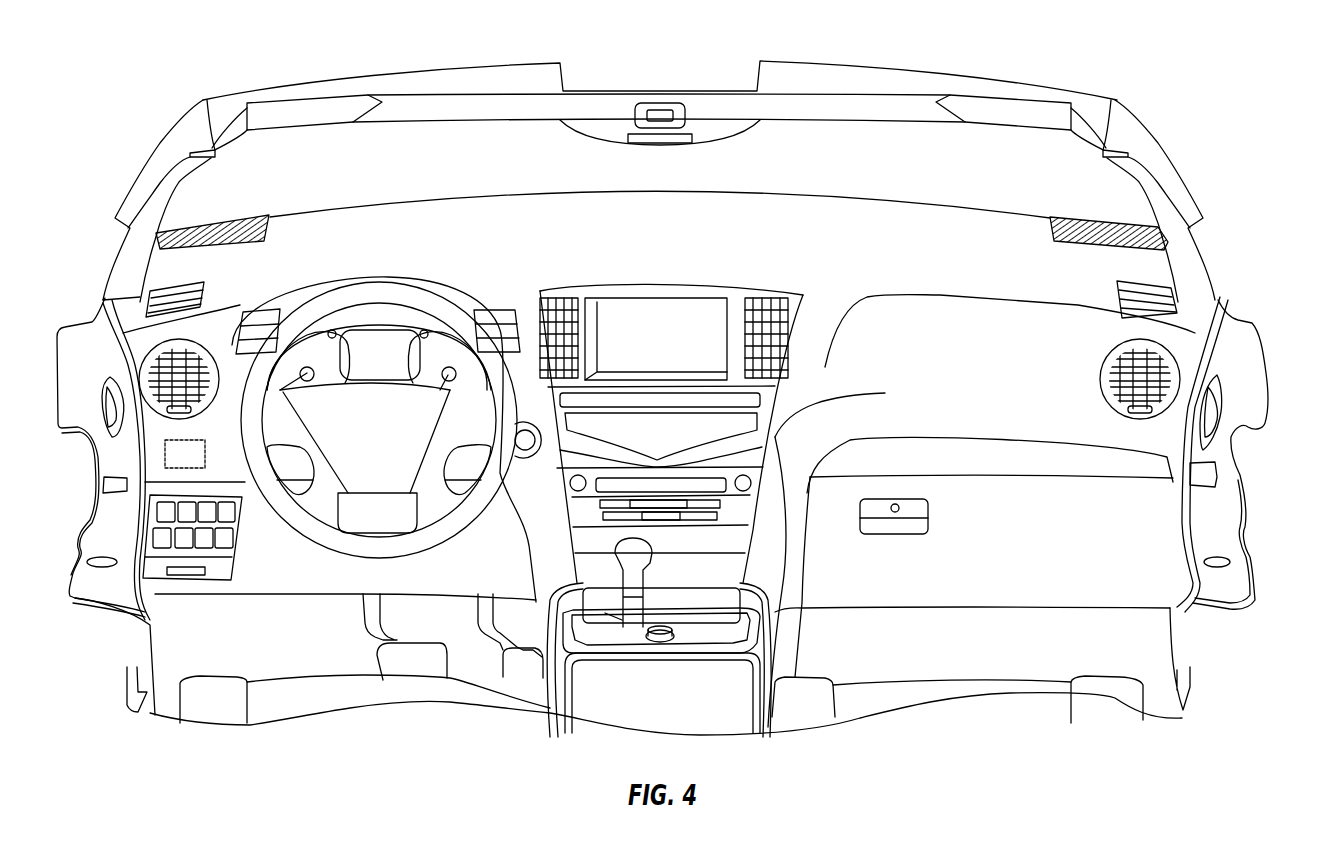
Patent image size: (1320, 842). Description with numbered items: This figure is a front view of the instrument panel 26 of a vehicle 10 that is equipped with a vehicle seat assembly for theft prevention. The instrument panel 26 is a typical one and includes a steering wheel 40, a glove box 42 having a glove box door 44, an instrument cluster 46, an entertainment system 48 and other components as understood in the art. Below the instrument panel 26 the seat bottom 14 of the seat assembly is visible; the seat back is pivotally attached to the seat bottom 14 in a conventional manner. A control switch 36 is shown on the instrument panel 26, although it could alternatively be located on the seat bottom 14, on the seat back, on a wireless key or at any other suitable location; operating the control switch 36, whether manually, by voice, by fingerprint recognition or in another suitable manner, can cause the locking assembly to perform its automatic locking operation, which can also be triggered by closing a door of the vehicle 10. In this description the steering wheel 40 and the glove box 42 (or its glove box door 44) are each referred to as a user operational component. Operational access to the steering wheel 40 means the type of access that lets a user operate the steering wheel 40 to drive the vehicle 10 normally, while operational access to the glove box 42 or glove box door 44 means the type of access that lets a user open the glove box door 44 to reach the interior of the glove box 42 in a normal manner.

The vehicle 10 is at (144, 58).
The seat bottom 14 is at (307, 680).
The instrument panel 26 is at (950, 242).
The control switch 36 is at (177, 453).
The steering wheel 40 is at (377, 284).
The glove box 42 is at (977, 466).
The glove box door 44 is at (1127, 552).
The instrument cluster 46 is at (450, 288).
The entertainment system 48 is at (680, 317).